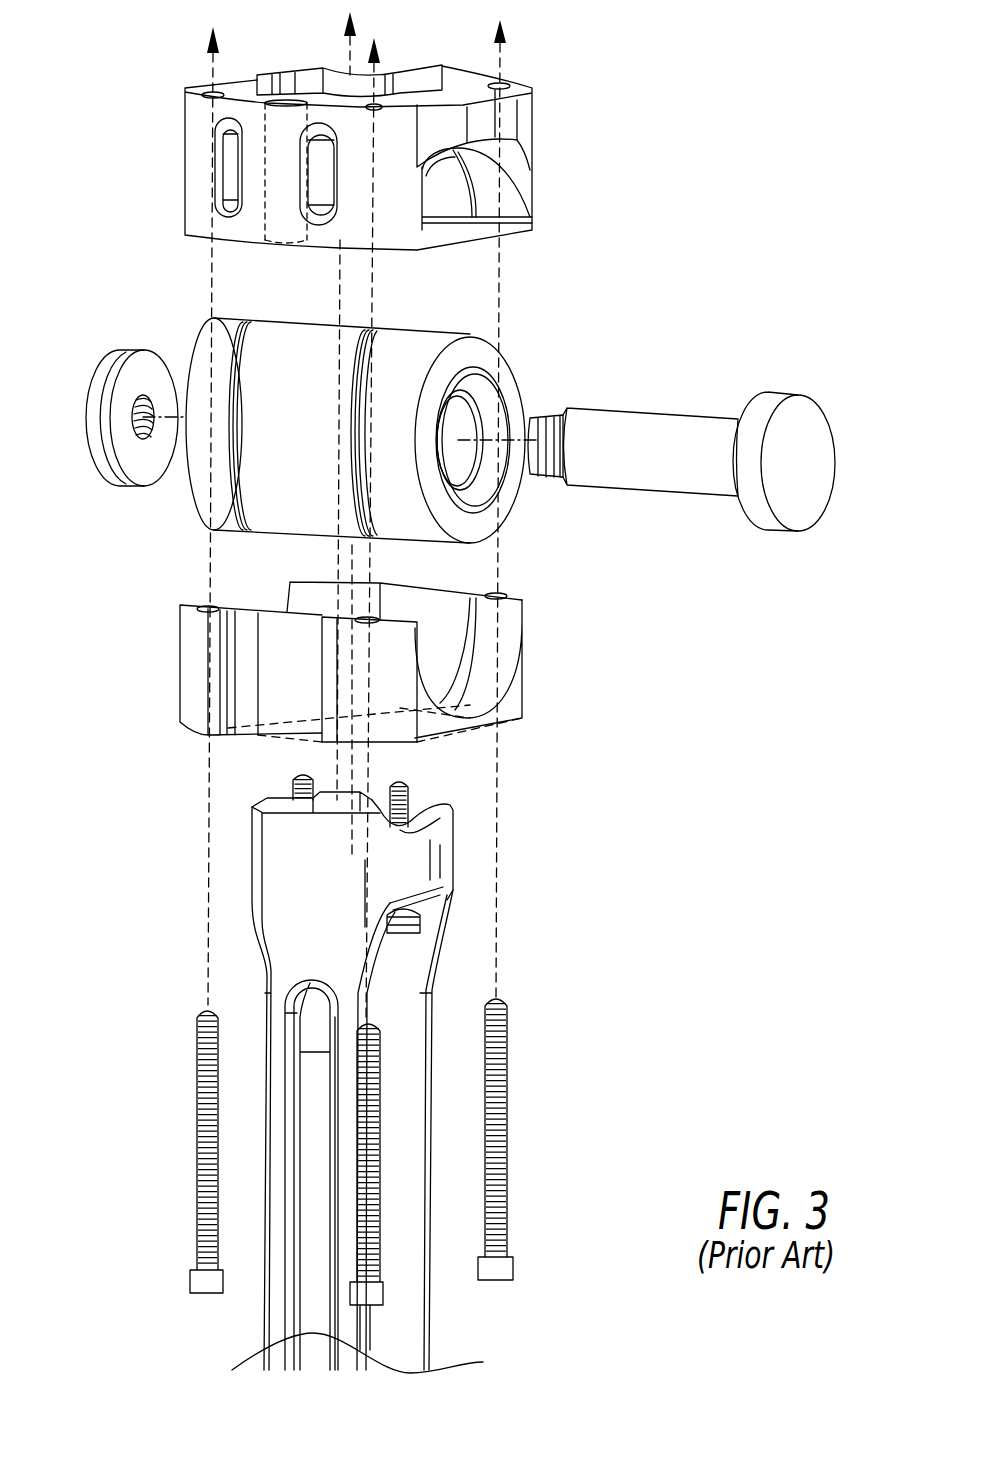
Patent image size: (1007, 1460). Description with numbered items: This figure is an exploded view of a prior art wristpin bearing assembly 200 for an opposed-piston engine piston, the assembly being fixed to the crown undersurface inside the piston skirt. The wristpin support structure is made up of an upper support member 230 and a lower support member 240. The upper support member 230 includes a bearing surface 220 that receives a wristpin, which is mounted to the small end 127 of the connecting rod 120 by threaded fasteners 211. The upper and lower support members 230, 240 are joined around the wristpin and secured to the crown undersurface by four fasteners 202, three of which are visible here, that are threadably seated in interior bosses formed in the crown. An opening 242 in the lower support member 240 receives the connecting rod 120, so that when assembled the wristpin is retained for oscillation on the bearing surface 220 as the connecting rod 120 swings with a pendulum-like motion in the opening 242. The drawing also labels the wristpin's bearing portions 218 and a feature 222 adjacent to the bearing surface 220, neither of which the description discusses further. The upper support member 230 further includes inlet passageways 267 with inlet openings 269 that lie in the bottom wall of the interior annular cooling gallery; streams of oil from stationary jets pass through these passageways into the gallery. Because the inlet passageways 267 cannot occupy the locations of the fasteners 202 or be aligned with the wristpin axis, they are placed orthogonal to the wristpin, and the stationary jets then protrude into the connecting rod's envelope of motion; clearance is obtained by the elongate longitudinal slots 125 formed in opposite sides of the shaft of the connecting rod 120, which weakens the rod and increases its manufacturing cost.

The connecting rod 120 is at (388, 1072).
The elongate longitudinal slots 125 is at (313, 1275).
The small end 127 is at (430, 852).
The wristpin bearing assembly 200 is at (72, 93).
The fasteners 202 is at (458, 1290).
The threaded fasteners 211 is at (410, 783).
The bearings 218 is at (387, 518).
The bearing surface 220 is at (443, 197).
The slot 222 is at (470, 192).
The upper support member 230 is at (528, 175).
The lower support member 240 is at (527, 657).
The opening 242 is at (423, 730).
The inlet passageways 267 is at (262, 137).
The inlet openings 269 is at (447, 77).